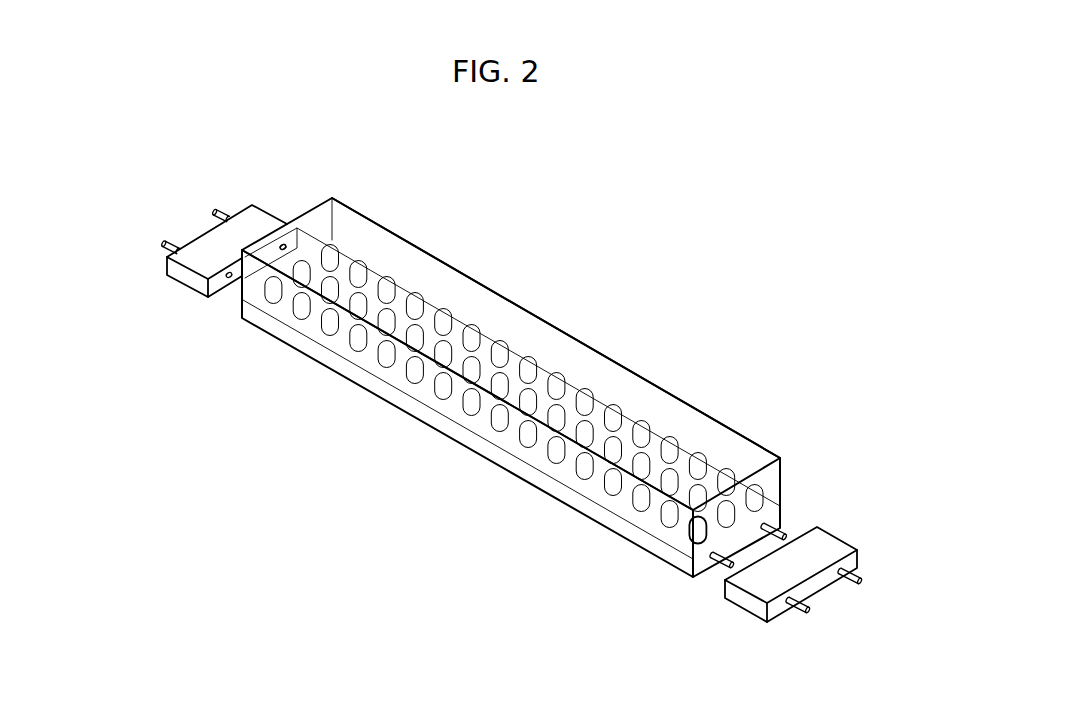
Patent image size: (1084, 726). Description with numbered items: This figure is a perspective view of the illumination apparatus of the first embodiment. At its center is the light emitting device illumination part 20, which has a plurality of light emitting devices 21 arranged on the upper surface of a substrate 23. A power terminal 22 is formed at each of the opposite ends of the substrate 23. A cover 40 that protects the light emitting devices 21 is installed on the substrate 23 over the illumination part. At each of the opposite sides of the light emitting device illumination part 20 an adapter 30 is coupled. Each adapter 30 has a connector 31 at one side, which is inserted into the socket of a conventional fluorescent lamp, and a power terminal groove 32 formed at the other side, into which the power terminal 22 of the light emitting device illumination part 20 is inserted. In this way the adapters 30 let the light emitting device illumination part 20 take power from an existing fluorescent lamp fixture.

The light emitting device illumination part 20 is at (491, 420).
The light emitting devices 21 is at (610, 494).
The power terminal 22 is at (240, 288).
The substrate 23 is at (633, 538).
The adapter 30 is at (490, 428).
The connector 31 is at (174, 239).
The power terminal groove 32 is at (283, 245).
The cover 40 is at (573, 350).